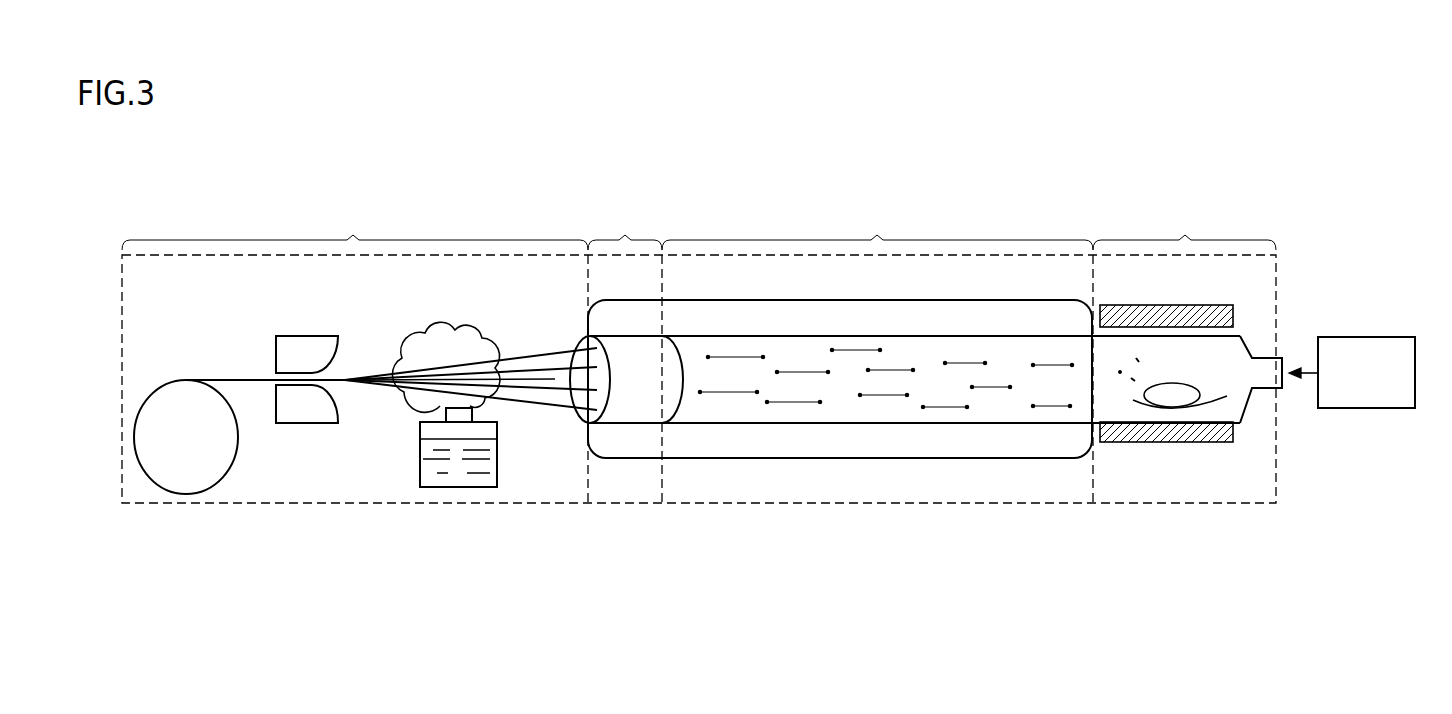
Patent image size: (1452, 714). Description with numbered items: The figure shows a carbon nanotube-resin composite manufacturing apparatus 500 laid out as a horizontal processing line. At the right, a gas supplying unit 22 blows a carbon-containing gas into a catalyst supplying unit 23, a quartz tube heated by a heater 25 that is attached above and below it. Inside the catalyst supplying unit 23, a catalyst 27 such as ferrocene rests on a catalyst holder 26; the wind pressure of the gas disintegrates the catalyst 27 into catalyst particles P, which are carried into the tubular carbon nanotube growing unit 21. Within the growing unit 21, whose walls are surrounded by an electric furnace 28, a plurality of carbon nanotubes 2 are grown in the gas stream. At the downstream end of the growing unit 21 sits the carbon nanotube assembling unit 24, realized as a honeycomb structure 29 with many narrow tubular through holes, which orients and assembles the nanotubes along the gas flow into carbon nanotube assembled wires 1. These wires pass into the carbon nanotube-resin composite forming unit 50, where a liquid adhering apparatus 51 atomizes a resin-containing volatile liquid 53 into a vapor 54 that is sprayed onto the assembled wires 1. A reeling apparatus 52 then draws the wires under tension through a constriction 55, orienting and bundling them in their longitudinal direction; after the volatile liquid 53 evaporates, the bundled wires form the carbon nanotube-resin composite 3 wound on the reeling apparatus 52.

The carbon nanotube-resin composite manufacturing apparatus 500 is at (1352, 225).
The carbon nanotube-resin composite forming unit 50 is at (355, 231).
The carbon nanotube assembling unit 24 is at (926, 318).
The carbon nanotube growing unit 21 is at (840, 335).
The catalyst supplying unit 23 is at (1184, 230).
The electric furnace 28 is at (1020, 300).
The honeycomb structure 29 is at (633, 406).
The short fibers 2 is at (1050, 407).
The heater 25 is at (1215, 318).
The catalyst 27 is at (1188, 396).
The catalyst holder 26 is at (1226, 400).
The catalyst particles P is at (1121, 377).
The gas supplying unit 22 is at (1366, 337).
The reeling apparatus 52 is at (184, 486).
The carbon nanotube-resin composite 3 is at (233, 378).
The constriction 55 is at (305, 336).
The fibers 1 is at (513, 392).
The mist 54 is at (477, 334).
The volatile liquid 53 is at (490, 462).
The liquid adhering apparatus 51 is at (458, 490).